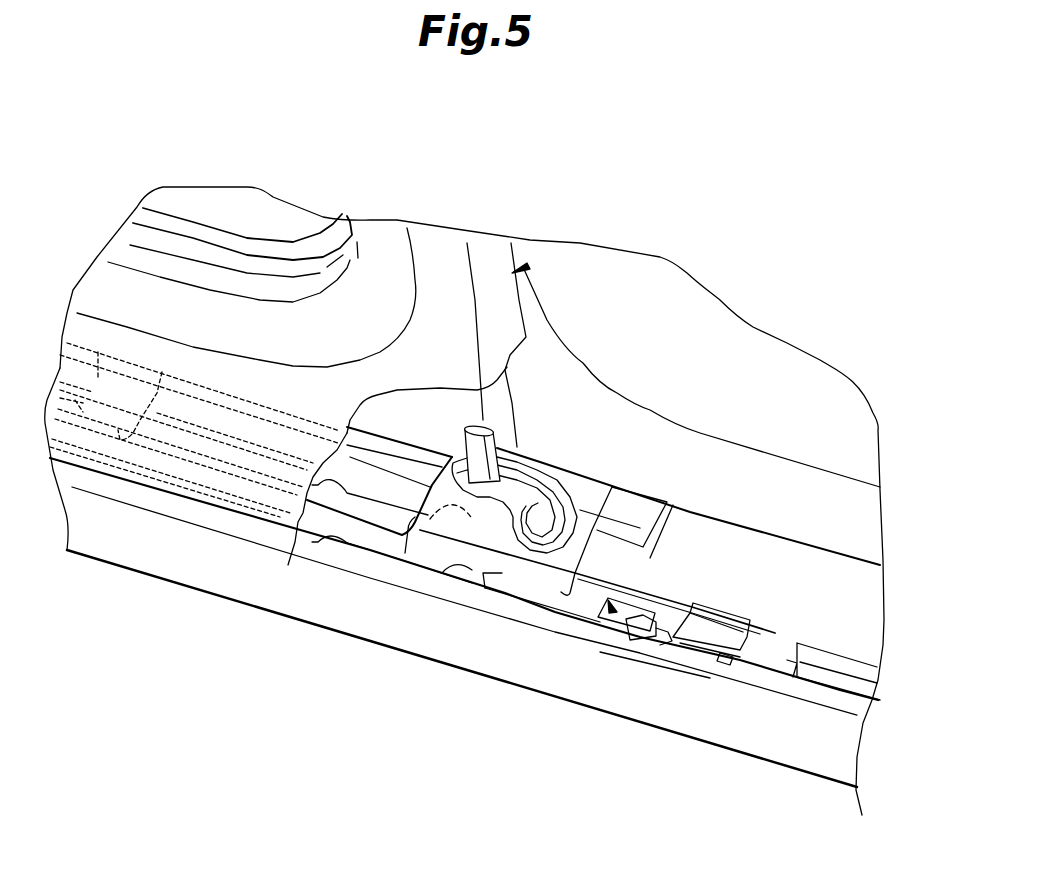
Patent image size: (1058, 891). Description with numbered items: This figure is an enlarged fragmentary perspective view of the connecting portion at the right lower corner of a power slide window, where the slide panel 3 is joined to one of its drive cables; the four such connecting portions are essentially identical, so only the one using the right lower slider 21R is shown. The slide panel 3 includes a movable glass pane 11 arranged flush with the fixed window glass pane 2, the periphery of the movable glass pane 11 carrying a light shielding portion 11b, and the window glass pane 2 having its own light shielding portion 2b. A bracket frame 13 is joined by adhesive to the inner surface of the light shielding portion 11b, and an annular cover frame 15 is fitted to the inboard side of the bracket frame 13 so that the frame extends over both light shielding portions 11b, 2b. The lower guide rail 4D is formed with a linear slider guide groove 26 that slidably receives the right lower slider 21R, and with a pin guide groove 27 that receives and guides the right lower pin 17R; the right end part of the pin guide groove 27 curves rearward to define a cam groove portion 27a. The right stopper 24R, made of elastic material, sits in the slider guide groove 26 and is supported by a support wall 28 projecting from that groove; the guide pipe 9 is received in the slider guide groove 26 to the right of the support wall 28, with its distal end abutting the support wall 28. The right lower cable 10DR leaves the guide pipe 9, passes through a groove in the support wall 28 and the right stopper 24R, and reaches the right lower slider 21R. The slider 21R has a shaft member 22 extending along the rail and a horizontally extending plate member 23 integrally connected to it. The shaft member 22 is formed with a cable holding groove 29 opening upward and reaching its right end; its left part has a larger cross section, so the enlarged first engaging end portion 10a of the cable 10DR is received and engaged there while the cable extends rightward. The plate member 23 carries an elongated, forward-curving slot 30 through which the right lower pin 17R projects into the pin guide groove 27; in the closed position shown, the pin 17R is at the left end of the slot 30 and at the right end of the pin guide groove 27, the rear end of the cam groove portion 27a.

The window glass pane 2 is at (742, 330).
The light shielding portion 2b is at (860, 522).
The slide panel 3 is at (530, 267).
The lower guide rail 4D is at (795, 752).
The guide pipe 9 is at (840, 683).
The first engaging end portion 10a is at (610, 612).
The right lower cable 10DR is at (660, 613).
The movable glass pane 11 is at (263, 217).
The light shielding portion 11b is at (323, 243).
The bracket frame 13 is at (417, 403).
The cover frame 15 is at (452, 277).
The right lower pin 17R is at (498, 438).
The right lower slider 21R is at (510, 800).
The shaft member 22 is at (530, 593).
The plate member 23 is at (483, 573).
The right stopper 24R is at (723, 620).
The slider guide groove 26 is at (315, 542).
The pin guide groove 27 is at (288, 565).
The cam groove portion 27a is at (440, 572).
The support wall 28 is at (718, 625).
The cable holding groove 29 is at (600, 599).
The slot 30 is at (547, 497).